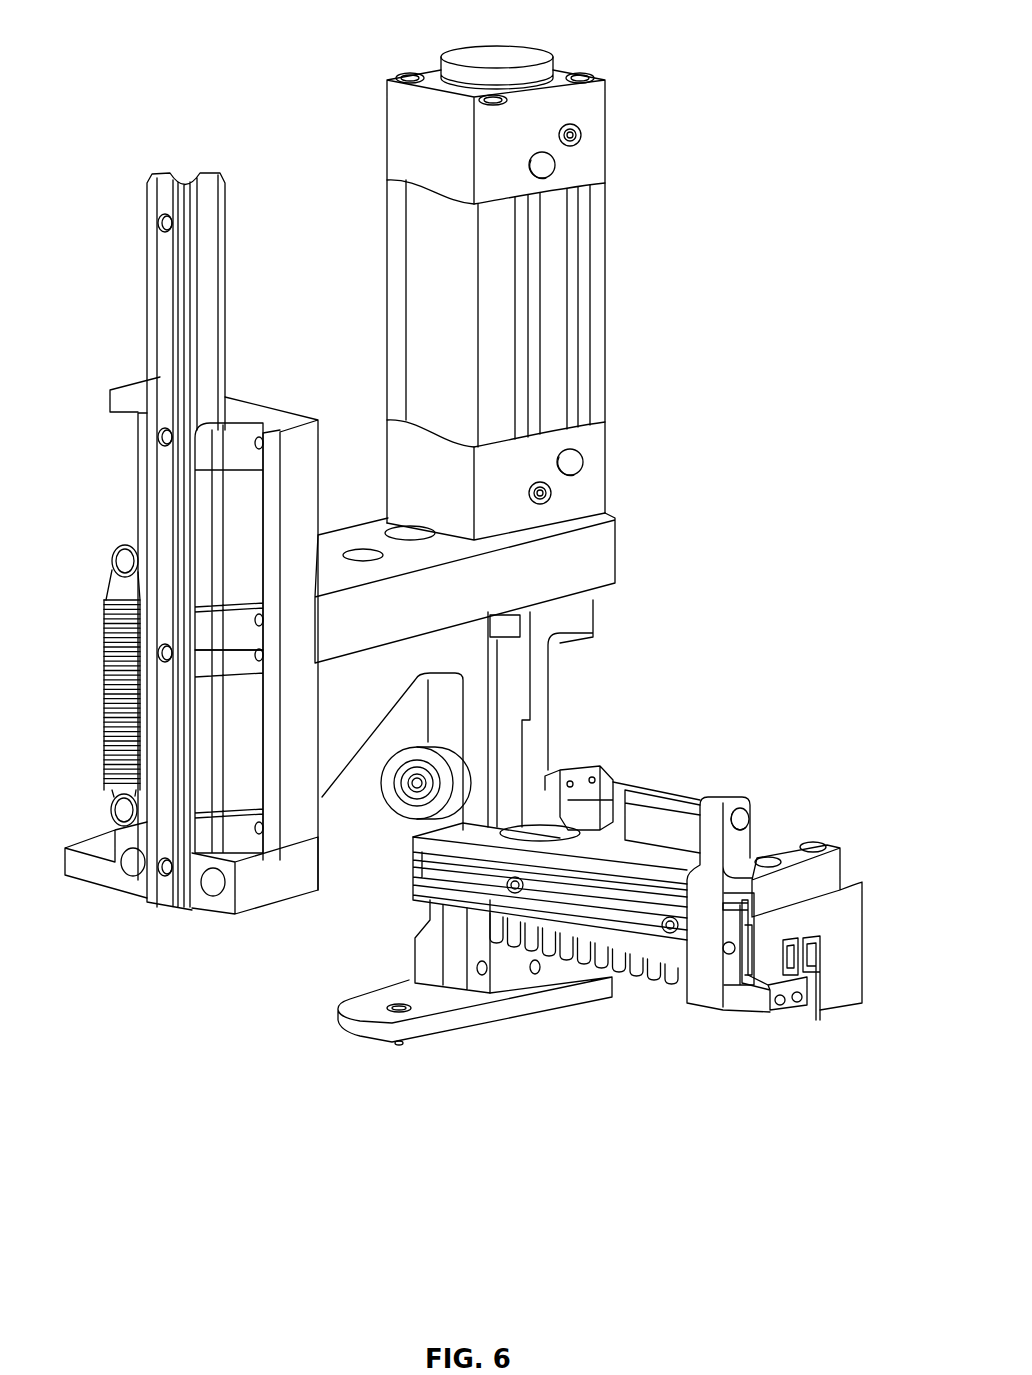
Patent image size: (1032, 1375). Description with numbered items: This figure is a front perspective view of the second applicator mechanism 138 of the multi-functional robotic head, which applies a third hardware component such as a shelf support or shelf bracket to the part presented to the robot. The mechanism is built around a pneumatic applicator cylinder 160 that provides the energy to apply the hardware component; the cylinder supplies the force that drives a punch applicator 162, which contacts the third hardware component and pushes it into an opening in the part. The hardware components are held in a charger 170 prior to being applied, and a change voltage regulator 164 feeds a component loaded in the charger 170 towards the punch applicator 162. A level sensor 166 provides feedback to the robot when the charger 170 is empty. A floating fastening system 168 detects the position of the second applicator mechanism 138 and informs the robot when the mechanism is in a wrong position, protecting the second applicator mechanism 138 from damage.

The second applicator mechanism 138 is at (770, 268).
The pneumatic applicator cylinder 160 is at (590, 120).
The punch applicator 162 is at (495, 762).
The change voltage regulator 164 is at (783, 1020).
The level sensor 166 is at (573, 793).
The floating fastening system 168 is at (160, 505).
The charger 170 is at (838, 920).